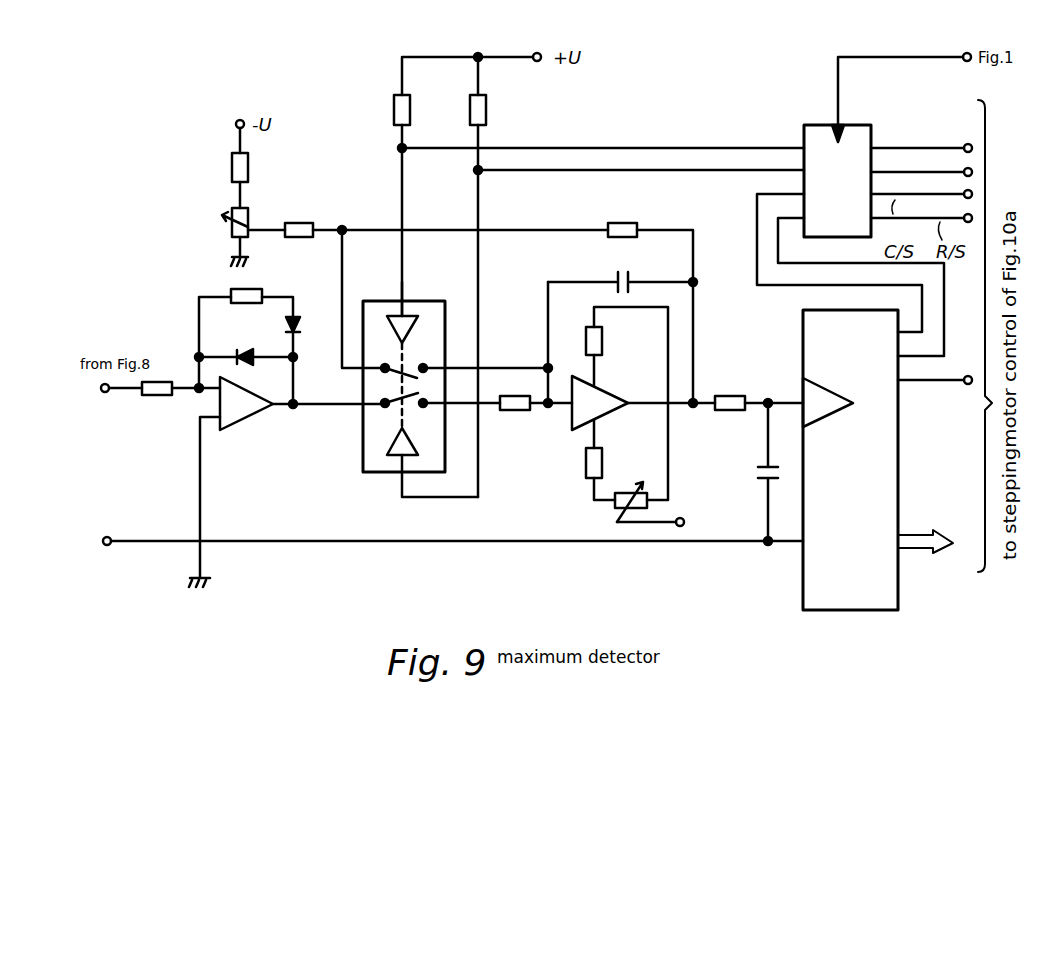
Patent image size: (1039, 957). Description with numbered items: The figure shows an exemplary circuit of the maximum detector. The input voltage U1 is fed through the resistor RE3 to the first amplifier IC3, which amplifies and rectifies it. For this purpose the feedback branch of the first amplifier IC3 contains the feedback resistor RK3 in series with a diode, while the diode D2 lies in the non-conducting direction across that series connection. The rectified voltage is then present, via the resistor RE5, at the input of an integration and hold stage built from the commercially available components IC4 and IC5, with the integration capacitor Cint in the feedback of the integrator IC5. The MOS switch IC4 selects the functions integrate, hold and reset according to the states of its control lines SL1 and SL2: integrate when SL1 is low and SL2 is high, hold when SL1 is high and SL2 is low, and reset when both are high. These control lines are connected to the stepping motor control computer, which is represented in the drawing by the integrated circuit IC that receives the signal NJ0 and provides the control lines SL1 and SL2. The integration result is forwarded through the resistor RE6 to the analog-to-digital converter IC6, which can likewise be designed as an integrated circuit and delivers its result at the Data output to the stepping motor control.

The voltage U1 is at (120, 392).
The resistor RE3 is at (158, 397).
The first amplifier IC3 is at (231, 482).
The feedback resistor RK3 is at (255, 287).
The diode D2 is at (244, 354).
The control output SL1 is at (406, 283).
The MOS switch IC4 is at (363, 440).
The control output SL2 is at (398, 484).
The resistor RE5 is at (518, 411).
The integration capacitor Cint is at (614, 272).
The integration and hold stage component IC5 is at (645, 420).
The resistor RE6 is at (730, 411).
The analog-to-digital converter IC6 is at (887, 460).
The integrated circuit IC is at (864, 240).
The signal NJ0 is at (912, 55).
The data output Data is at (918, 538).